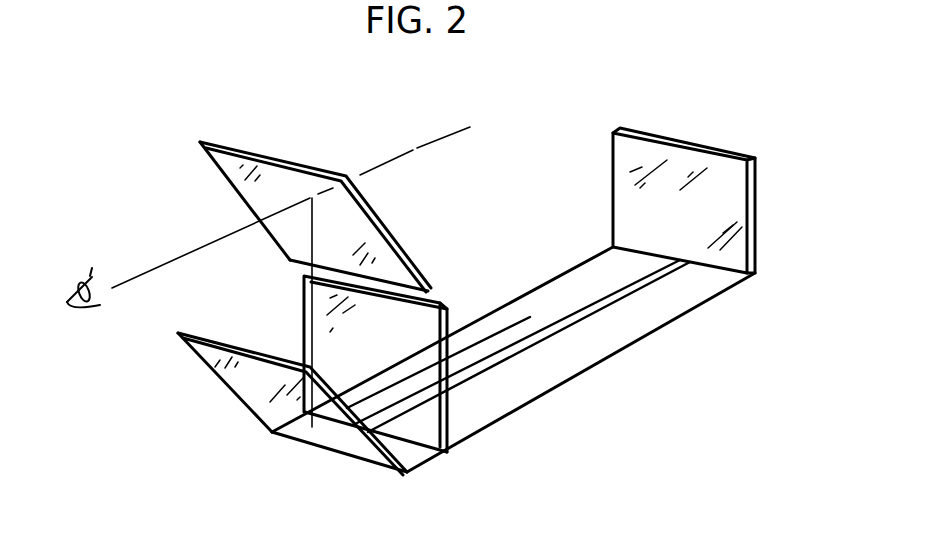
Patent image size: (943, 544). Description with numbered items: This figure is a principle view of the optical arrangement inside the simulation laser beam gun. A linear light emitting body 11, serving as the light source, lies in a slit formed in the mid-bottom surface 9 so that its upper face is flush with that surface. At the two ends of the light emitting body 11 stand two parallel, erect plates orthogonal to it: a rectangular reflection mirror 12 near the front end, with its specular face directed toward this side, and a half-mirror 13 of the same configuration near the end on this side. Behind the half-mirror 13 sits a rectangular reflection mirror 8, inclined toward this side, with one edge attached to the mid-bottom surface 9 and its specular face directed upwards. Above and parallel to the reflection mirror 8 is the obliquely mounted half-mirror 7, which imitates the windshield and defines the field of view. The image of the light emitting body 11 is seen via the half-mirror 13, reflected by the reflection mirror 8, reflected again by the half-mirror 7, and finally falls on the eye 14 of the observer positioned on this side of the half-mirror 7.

The half-mirror 7 is at (283, 177).
The reflection mirror 8 is at (258, 397).
The mid-bottom surface 9 is at (557, 360).
The light emitting body 11 is at (622, 290).
The reflection mirror 12 is at (723, 200).
The half-mirror 13 is at (423, 418).
The eye 14 is at (78, 292).